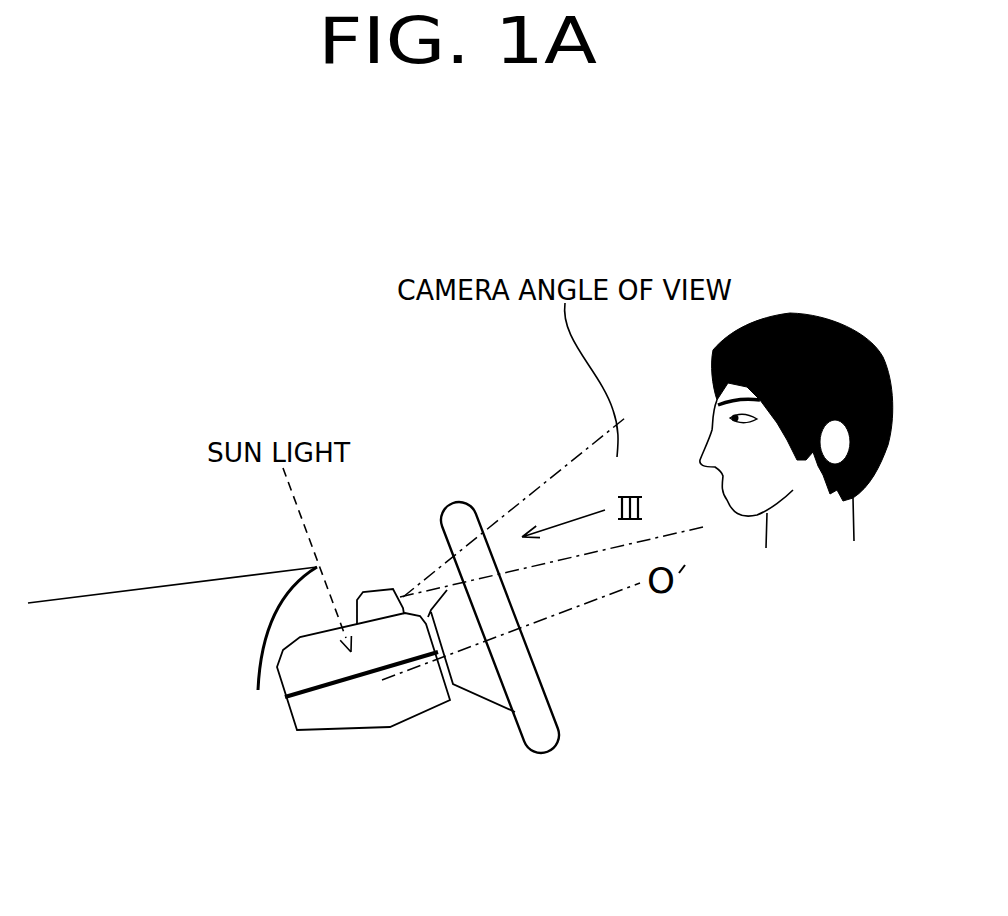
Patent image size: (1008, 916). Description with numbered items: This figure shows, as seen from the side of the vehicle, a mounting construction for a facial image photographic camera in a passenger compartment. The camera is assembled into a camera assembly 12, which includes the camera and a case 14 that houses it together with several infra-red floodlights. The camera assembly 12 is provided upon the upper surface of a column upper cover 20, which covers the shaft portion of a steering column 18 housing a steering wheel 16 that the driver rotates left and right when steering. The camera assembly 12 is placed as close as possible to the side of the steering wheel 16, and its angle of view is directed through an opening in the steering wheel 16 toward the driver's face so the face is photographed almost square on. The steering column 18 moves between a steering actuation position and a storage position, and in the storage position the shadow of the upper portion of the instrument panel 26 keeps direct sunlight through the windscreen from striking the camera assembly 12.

The camera assembly 12 is at (352, 606).
The case 14 is at (349, 605).
The steering wheel 16 is at (558, 720).
The steering column 18 is at (469, 720).
The column upper cover 20 is at (277, 662).
The instrument panel 26 is at (90, 597).